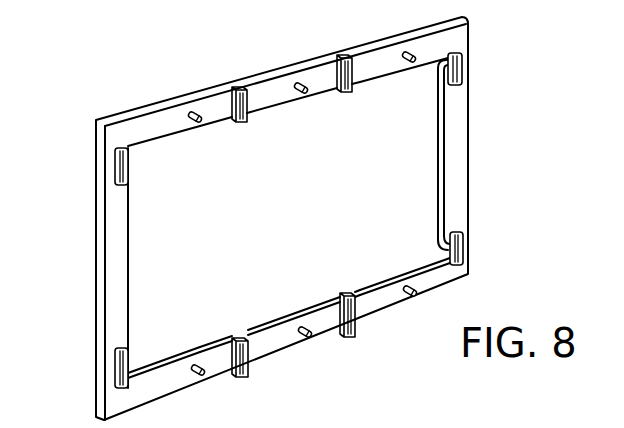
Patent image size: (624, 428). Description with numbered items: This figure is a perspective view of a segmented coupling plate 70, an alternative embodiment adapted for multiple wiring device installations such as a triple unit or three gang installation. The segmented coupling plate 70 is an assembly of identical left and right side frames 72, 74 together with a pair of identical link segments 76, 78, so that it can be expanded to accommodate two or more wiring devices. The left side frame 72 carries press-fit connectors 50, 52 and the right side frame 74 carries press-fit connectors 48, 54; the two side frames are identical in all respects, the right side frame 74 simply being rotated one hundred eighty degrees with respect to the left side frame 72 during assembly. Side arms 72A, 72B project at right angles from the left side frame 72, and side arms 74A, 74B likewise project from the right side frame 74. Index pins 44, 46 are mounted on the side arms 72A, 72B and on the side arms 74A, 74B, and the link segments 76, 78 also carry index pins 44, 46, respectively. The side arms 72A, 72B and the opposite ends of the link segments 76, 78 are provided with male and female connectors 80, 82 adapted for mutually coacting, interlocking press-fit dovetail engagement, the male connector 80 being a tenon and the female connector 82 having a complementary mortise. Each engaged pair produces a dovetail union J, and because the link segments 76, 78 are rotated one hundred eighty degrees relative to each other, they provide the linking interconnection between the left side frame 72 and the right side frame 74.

The segmented coupling plate 70 is at (90, 104).
The left side frame 72 is at (116, 282).
The side arm 72A is at (161, 375).
The side arm 72B is at (156, 134).
The right side frame 74 is at (461, 137).
The side arm 74A is at (392, 284).
The side arm 74B is at (391, 65).
The link segment 76 is at (306, 344).
The link segment 78 is at (274, 88).
The press-fit connector 48 is at (462, 247).
The press-fit connector 50 is at (117, 366).
The press-fit connector 52 is at (115, 166).
The press-fit connector 54 is at (462, 64).
The male connector 80 is at (337, 78).
The female connector 82 is at (357, 65).
The index pin 44 is at (199, 364).
The index pin 46 is at (191, 111).
The dovetail union J is at (353, 52).